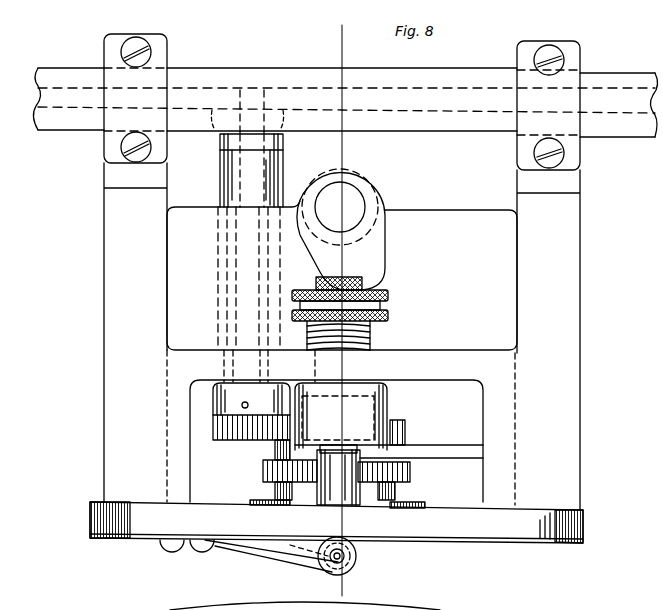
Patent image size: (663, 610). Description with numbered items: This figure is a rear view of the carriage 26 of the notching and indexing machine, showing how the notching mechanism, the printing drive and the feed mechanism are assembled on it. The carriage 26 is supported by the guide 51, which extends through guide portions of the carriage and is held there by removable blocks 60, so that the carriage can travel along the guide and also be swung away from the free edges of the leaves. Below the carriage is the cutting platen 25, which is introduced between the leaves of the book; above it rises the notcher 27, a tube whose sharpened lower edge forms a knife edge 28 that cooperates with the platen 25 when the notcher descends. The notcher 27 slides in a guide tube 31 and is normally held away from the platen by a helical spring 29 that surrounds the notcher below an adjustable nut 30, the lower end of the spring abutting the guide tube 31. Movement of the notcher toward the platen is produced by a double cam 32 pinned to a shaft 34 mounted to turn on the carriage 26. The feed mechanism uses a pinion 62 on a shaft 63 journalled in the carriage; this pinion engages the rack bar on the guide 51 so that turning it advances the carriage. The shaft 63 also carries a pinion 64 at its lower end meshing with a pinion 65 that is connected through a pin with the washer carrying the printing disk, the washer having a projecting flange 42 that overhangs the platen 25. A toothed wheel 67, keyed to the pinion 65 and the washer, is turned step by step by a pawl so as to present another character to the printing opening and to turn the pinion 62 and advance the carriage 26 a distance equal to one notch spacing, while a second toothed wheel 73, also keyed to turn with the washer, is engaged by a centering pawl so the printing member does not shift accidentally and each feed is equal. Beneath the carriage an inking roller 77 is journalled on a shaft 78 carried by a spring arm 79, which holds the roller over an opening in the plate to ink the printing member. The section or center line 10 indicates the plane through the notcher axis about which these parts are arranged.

The center line / section plane 10 is at (349, 20).
The cutting platen 25 is at (585, 520).
The carriage 26 is at (570, 313).
The notcher 27 is at (358, 500).
The knife edge 28 is at (335, 505).
The helical spring 29 is at (370, 340).
The adjustable nut 30 is at (388, 296).
The guide tube 31 is at (387, 400).
The double cam 32 is at (385, 245).
The shaft 34 is at (350, 201).
The projecting flange 42 is at (425, 504).
The guide 51 is at (228, 66).
The removable blocks 60 is at (124, 34).
The pinion 62 is at (283, 133).
The shaft 63 is at (240, 276).
The pinion 64 is at (222, 440).
The pinion 65 is at (405, 430).
The toothed wheel 67 is at (263, 470).
The toothed wheel 73 is at (410, 470).
The inking roller 77 is at (356, 556).
The shaft 78 is at (344, 562).
The spring arm 79 is at (238, 548).